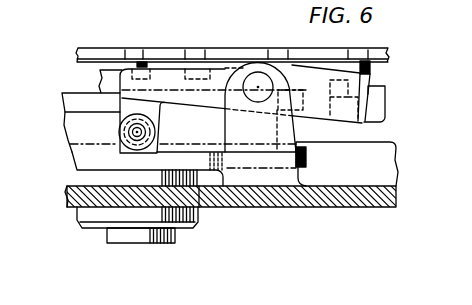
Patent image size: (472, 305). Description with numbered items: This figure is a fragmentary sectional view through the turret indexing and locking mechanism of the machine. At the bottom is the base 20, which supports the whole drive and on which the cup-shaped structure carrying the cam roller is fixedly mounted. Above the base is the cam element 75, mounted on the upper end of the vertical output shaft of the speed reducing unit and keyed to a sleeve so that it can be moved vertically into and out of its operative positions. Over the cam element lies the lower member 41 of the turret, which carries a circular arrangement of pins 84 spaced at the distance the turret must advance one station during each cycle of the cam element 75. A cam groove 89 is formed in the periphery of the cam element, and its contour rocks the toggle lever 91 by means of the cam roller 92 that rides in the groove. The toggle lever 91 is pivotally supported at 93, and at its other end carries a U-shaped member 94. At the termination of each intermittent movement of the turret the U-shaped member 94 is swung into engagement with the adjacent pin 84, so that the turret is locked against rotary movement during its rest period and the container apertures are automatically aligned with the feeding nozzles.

The lower member 41 is at (110, 57).
The cam element 75 is at (70, 100).
The cam groove 89 is at (68, 122).
The cam roller 92 is at (118, 119).
The pivot 93 is at (252, 72).
The toggle lever 91 is at (315, 106).
The pin 84 is at (372, 67).
The U-shaped member 94 is at (381, 93).
The base 20 is at (364, 207).